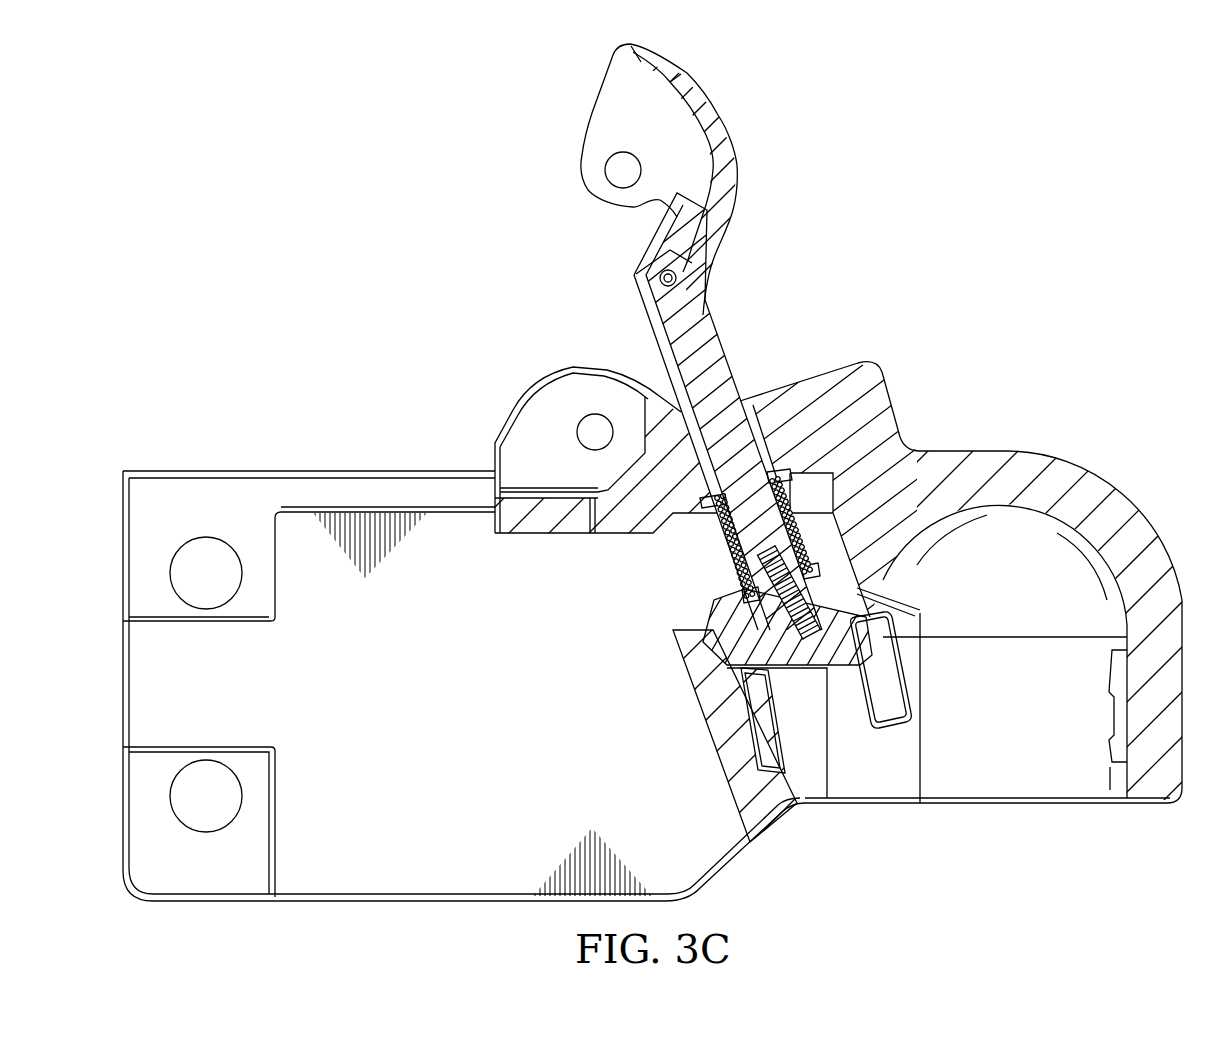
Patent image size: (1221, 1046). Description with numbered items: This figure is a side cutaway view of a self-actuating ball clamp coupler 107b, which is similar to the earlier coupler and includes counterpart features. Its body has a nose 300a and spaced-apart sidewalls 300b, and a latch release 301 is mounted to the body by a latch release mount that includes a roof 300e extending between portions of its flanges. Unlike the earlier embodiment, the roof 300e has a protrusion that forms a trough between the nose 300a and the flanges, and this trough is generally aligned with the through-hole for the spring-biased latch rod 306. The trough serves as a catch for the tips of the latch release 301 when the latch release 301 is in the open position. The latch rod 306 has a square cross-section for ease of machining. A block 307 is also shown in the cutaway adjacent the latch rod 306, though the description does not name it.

The self-actuating ball clamp coupler 107b is at (626, 488).
The nose 300a is at (1067, 475).
The spaced-apart sidewalls 300b is at (163, 469).
The roof 300e is at (843, 364).
The latch release 301 is at (725, 162).
The latch rod 306 is at (710, 358).
The adjustment block 307 is at (723, 604).